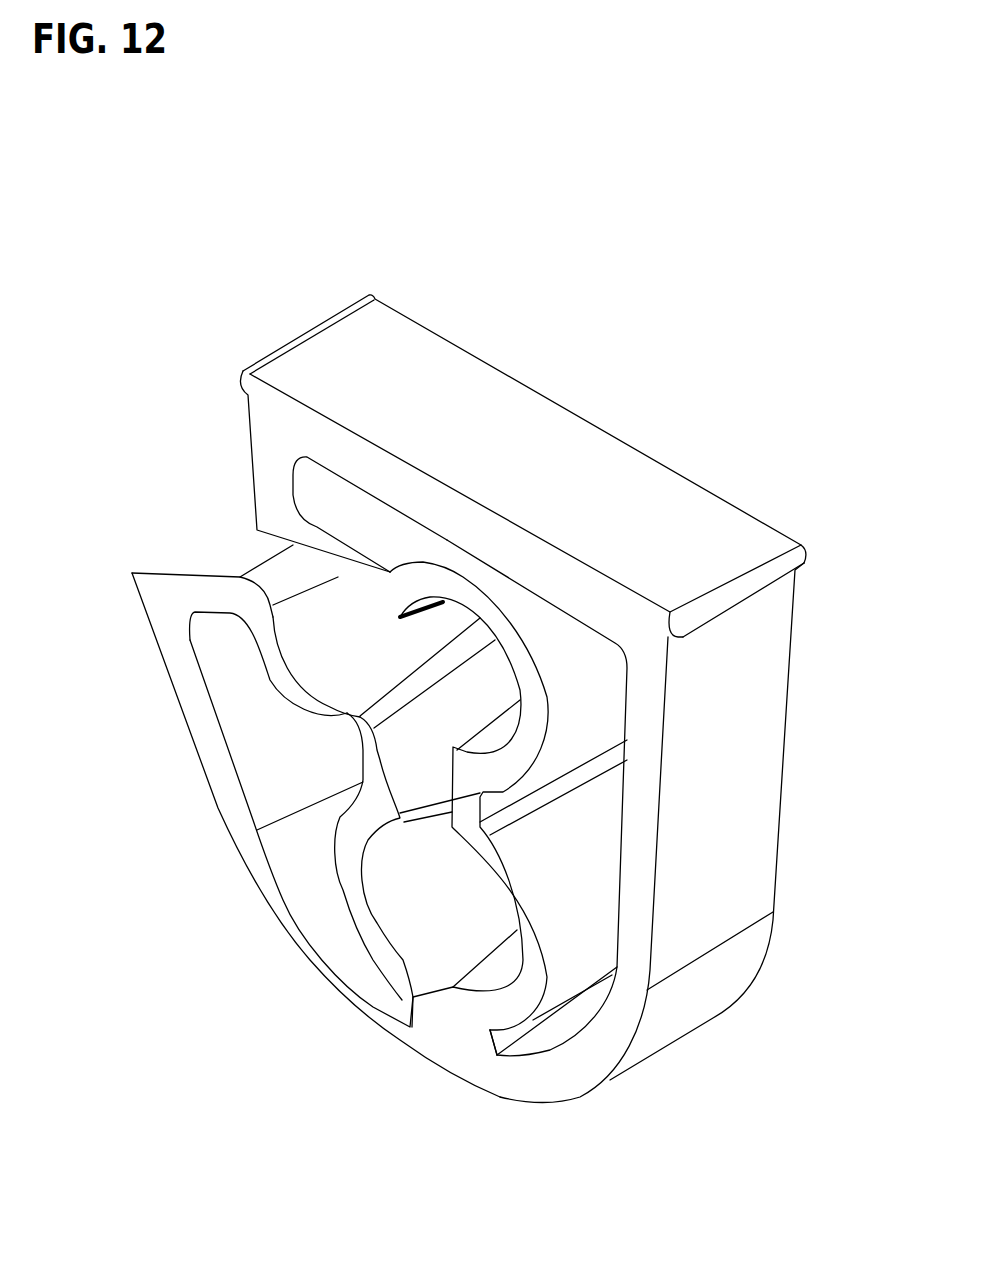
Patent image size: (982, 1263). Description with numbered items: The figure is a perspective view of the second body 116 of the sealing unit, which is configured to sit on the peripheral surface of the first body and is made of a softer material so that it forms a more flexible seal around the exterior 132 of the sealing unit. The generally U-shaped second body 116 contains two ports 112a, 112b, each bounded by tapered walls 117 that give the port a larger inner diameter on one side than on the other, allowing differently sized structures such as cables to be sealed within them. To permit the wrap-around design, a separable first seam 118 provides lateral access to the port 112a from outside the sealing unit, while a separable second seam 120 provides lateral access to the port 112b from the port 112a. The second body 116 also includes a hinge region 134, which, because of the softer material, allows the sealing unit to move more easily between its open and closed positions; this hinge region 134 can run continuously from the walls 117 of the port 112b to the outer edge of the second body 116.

The second body 116 is at (703, 340).
The first seam 118 is at (218, 553).
The tapered walls 117 is at (330, 650).
The port 112a is at (455, 715).
The port 112b is at (430, 942).
The second seam 120 is at (415, 782).
The exterior 132 is at (741, 771).
The hinge region 134 is at (440, 1023).